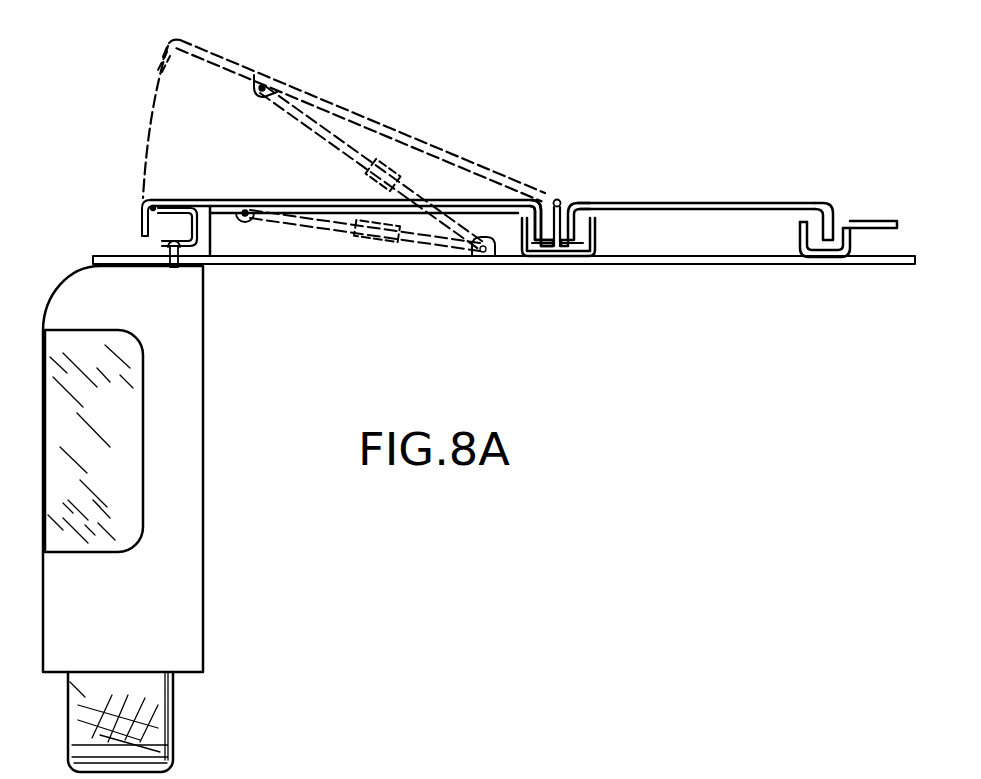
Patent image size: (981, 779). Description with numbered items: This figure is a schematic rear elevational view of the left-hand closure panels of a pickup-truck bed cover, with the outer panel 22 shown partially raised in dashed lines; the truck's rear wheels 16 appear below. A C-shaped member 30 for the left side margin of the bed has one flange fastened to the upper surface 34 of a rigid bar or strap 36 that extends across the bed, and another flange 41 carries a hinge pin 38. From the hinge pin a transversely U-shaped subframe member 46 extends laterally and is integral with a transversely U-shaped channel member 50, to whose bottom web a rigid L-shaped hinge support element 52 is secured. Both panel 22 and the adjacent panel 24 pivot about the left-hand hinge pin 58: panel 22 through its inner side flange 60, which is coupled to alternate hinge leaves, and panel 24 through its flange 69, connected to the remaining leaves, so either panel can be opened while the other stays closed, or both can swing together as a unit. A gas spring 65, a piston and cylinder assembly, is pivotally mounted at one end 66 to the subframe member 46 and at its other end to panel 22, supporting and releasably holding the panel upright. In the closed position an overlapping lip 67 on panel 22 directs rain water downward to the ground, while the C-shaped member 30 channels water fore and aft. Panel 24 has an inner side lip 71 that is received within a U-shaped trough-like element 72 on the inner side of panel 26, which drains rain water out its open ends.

The rear wheels 16 is at (176, 718).
The panel 22 is at (358, 112).
The panel 24 is at (710, 202).
The panel 26 is at (870, 220).
The C-shaped member 30 is at (170, 262).
The upper surface 34 is at (110, 256).
The rigid bar or strap 36 is at (346, 259).
The hinge pin 38 is at (143, 201).
The flange 41 is at (176, 207).
The U-shaped subframe member 46 is at (272, 240).
The U-shaped channel member 50 is at (597, 245).
The L-shaped hinge support element 52 is at (567, 242).
The left-hand hinge pin 58 is at (557, 199).
The inner side flange 60 is at (545, 210).
The gas spring 65 is at (410, 183).
The end of gas spring 66 is at (477, 258).
The overlapping lip 67 is at (166, 52).
The flange 69 is at (580, 217).
The inner side lip 71 is at (830, 226).
The U-shaped trough-like element 72 is at (803, 236).